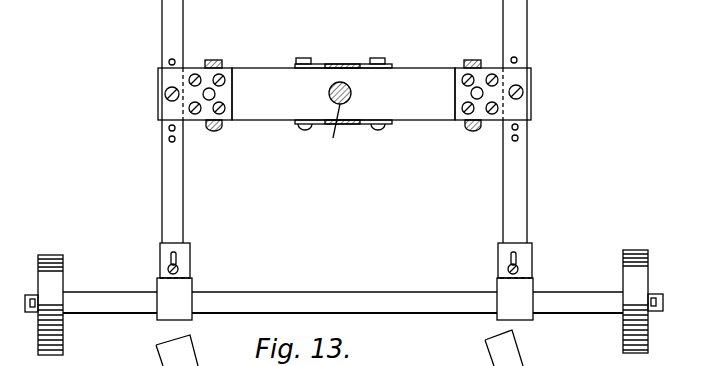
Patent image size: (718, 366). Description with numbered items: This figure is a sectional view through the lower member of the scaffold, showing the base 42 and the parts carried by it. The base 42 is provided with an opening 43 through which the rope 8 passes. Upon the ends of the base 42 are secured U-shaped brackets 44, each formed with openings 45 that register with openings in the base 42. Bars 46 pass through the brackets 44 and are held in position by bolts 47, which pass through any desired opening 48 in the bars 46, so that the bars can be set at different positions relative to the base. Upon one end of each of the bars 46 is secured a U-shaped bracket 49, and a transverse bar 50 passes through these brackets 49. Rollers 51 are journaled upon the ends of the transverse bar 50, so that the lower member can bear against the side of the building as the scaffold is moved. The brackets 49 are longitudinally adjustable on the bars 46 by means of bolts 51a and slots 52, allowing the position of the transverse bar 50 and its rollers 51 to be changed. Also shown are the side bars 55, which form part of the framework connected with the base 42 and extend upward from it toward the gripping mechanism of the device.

The rope 8 is at (333, 132).
The base 42 is at (343, 94).
The opening 43 is at (353, 96).
The U-shaped bracket 44 is at (166, 76).
The opening 45 is at (209, 90).
The bar 46 is at (178, 214).
The bolt 47 is at (167, 96).
The opening 48 is at (176, 129).
The U-shaped bracket 49 is at (185, 296).
The transverse bar 50 is at (390, 302).
The roller 51 is at (52, 258).
The bolt 51a is at (180, 270).
The slot 52 is at (178, 254).
The side bar 55 is at (223, 66).